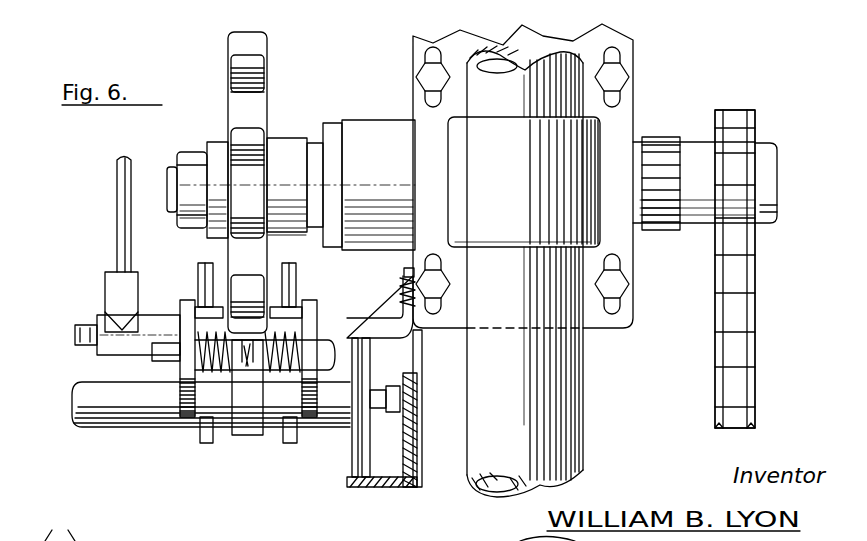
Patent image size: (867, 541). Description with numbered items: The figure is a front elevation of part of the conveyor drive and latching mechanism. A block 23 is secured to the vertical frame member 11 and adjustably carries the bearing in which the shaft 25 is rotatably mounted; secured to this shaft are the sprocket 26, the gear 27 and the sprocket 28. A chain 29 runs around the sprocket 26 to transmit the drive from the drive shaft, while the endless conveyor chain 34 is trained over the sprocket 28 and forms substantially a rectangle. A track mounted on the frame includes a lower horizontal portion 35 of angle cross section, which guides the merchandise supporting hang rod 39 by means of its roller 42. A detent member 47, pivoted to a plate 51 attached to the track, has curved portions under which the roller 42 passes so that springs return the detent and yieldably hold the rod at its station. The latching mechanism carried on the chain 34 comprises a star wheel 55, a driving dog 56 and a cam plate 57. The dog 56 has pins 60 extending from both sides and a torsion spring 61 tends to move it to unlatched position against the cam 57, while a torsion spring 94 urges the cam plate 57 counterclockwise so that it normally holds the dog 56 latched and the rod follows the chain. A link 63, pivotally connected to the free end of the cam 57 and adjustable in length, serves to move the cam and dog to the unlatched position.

The frame member 11 is at (568, 445).
The block 23 is at (590, 218).
The shaft 25 is at (168, 182).
The sprocket 26 is at (757, 153).
The gear 27 is at (661, 155).
The sprocket 28 is at (243, 83).
The chain 29 is at (755, 385).
The endless conveyor chain 34 is at (285, 310).
The lower horizontal portion 35 is at (397, 480).
The merchandise supporting hang rod 39 is at (98, 412).
The roller 42 is at (358, 440).
The detent member 47 is at (380, 320).
The plate 51 is at (420, 365).
The star wheel 55 is at (205, 268).
The driving dog 56 is at (244, 425).
The cam plate 57 is at (190, 315).
The pin 60 is at (209, 403).
The torsion spring 61 is at (247, 360).
The link 63 is at (120, 190).
The torsion spring 94 is at (198, 357).